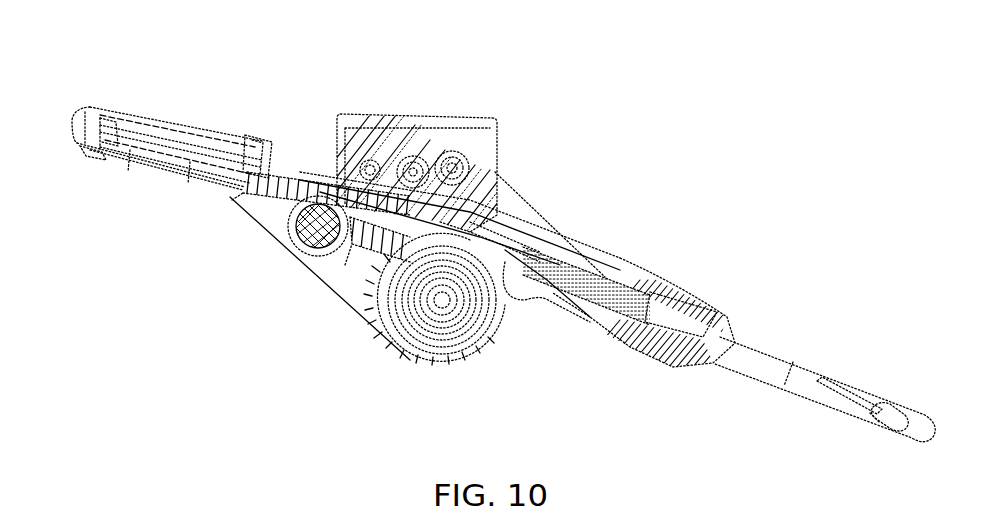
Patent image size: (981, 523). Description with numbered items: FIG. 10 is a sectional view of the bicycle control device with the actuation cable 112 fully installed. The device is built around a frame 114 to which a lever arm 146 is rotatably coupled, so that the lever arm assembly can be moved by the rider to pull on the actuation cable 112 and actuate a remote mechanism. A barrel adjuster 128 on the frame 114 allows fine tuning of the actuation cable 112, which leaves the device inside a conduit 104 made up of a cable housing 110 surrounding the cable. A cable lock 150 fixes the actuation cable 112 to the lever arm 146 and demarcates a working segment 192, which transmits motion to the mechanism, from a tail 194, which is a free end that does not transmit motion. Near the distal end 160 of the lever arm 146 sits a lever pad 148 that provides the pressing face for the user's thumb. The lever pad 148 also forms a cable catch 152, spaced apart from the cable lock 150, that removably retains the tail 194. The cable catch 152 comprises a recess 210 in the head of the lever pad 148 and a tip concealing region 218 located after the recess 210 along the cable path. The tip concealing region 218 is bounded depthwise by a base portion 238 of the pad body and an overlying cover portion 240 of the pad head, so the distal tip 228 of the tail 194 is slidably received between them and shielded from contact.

The conduit 104 is at (762, 360).
The cable housing 110 is at (862, 405).
The actuation cable 112 is at (502, 243).
The working segment 192 is at (550, 244).
The frame 114 is at (442, 133).
The barrel adjuster 128 is at (675, 250).
The lever arm 146 is at (278, 178).
The lever pad 148 is at (198, 150).
The cable lock 150 is at (310, 232).
The cable catch 152 is at (176, 183).
The distal end 160 is at (57, 115).
The tail 194 is at (265, 200).
The recess 210 is at (148, 150).
The tip concealing region 218 is at (112, 128).
The distal tip 228 is at (128, 138).
The base portion 238 is at (150, 130).
The cover portion 240 is at (100, 144).